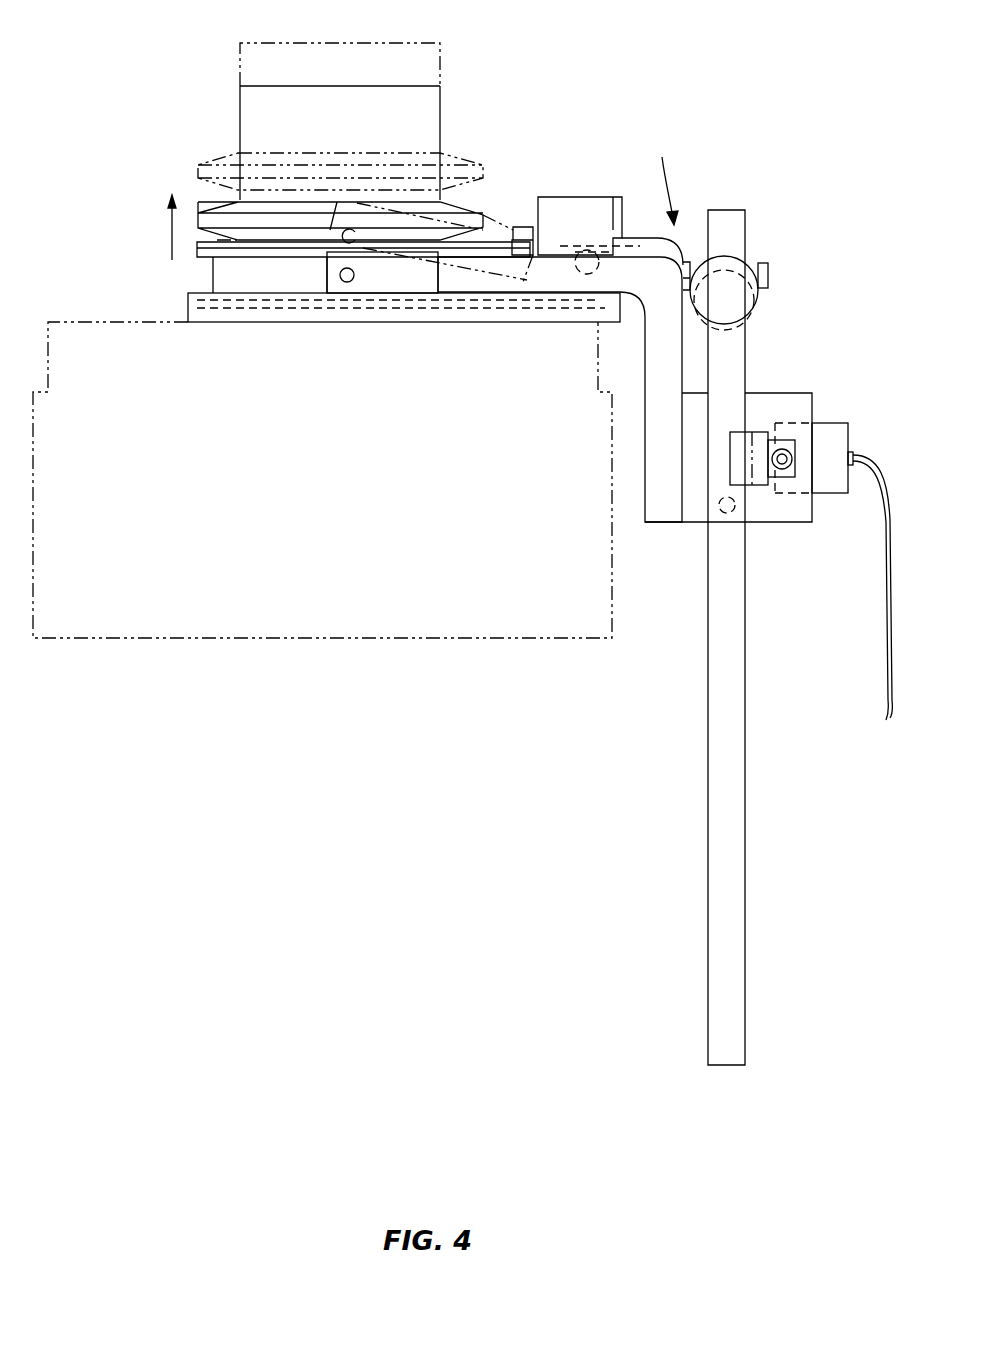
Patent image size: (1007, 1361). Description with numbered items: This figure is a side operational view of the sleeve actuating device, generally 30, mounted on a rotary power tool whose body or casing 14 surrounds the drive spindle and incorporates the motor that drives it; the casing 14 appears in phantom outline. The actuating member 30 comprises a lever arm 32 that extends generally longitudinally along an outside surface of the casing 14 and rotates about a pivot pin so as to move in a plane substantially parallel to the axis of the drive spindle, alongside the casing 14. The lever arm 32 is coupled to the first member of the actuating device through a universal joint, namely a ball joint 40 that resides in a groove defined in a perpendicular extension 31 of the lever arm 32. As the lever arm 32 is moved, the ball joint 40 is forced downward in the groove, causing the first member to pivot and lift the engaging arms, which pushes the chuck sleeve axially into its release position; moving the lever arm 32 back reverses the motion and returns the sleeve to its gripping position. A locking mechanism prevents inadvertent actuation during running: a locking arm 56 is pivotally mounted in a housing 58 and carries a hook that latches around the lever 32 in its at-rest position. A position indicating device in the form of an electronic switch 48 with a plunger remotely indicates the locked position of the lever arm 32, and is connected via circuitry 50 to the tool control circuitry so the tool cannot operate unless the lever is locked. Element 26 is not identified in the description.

The casing 14 is at (137, 610).
The lifting assembly 26 is at (589, 118).
The sleeve actuating device 30 is at (671, 673).
The perpendicular extension 31 is at (732, 212).
The lever arm 32 is at (733, 775).
The ball joint 40 is at (758, 256).
The electronic switch 48 is at (835, 435).
The circuitry 50 is at (888, 628).
The locking arm 56 is at (742, 477).
The housing 58 is at (777, 507).